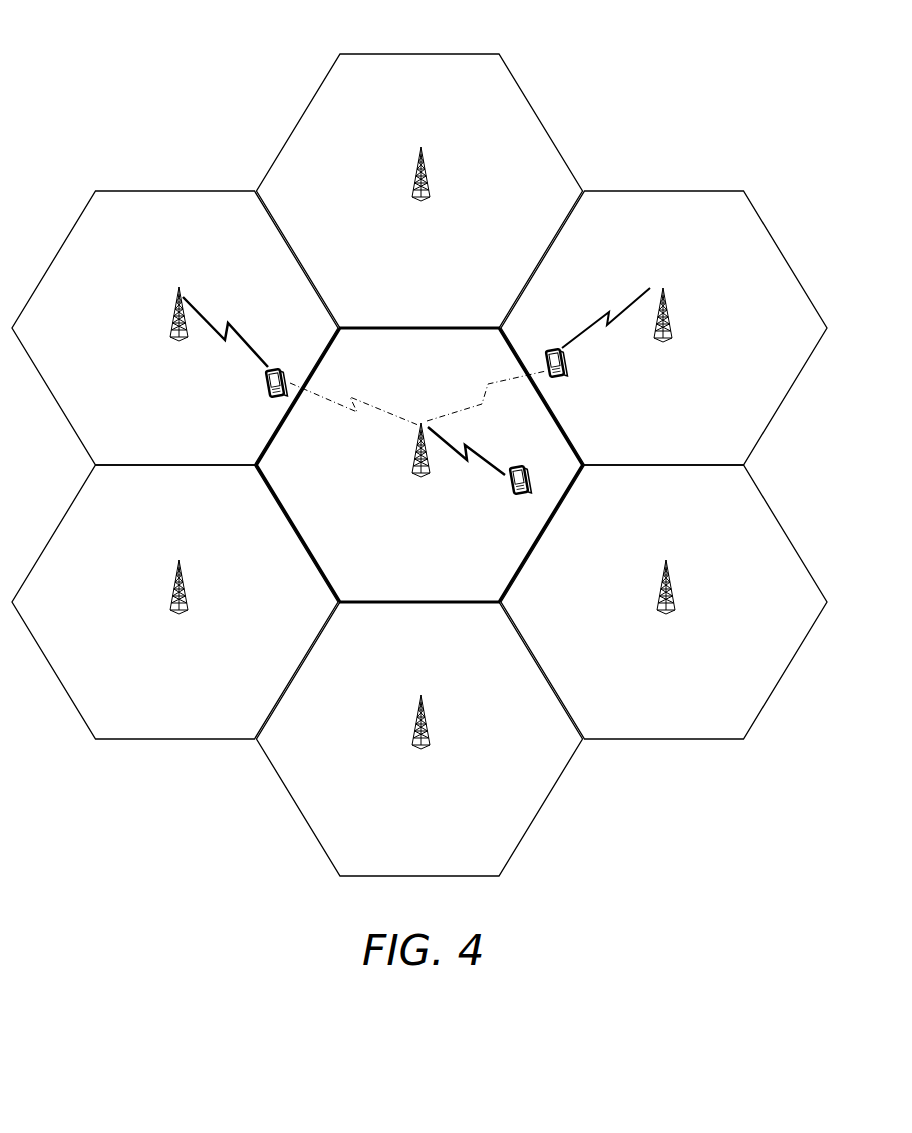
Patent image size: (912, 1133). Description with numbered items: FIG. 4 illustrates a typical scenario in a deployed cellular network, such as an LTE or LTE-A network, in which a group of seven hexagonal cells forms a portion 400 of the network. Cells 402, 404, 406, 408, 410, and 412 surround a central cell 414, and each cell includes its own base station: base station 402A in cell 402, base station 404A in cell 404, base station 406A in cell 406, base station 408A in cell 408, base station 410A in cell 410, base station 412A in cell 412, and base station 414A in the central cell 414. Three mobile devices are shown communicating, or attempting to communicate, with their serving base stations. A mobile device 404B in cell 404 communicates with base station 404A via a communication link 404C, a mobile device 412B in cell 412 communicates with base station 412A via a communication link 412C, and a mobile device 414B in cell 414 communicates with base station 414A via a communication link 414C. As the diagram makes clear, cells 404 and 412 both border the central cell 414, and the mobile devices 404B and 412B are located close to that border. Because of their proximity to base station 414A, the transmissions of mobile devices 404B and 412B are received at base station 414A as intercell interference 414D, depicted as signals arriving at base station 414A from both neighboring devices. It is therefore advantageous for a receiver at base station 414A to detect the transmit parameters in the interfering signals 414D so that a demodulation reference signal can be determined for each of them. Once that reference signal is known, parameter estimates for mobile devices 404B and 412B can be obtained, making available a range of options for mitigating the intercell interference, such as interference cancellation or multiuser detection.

The portion of the cellular network 400 is at (262, 63).
The cell 402 is at (420, 191).
The base station 402A is at (432, 187).
The cell 404 is at (664, 328).
The base station 404A is at (665, 329).
The mobile device 404B is at (578, 375).
The communication link 404C is at (595, 318).
The cell 406 is at (664, 602).
The base station 406A is at (666, 601).
The cell 408 is at (420, 739).
The base station 408A is at (423, 737).
The cell 410 is at (175, 602).
The base station 410A is at (180, 601).
The cell 412 is at (175, 328).
The base station 412A is at (180, 328).
The mobile device 412B is at (245, 385).
The communication link 412C is at (234, 332).
The cell 414 is at (420, 465).
The base station 414A is at (423, 463).
The mobile device 414B is at (513, 493).
The communication link 414C is at (480, 451).
The intercell interference 414D is at (460, 390).